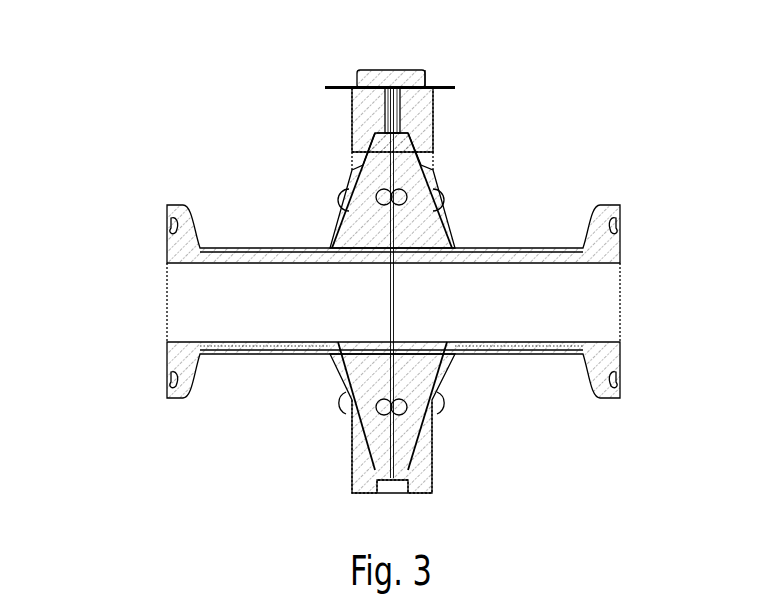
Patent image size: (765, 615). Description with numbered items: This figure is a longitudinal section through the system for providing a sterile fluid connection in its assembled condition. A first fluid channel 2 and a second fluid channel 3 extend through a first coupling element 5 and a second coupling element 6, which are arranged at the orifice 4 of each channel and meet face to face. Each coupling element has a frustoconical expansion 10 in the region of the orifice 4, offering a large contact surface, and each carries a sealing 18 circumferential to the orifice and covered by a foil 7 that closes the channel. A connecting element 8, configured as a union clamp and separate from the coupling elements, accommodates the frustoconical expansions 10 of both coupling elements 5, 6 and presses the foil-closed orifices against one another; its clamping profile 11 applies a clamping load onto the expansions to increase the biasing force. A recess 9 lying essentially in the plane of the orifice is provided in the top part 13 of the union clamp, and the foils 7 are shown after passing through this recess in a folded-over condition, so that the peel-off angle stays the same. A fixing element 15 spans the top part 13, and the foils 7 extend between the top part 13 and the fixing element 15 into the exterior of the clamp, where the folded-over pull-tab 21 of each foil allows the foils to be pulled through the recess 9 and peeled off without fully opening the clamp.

The first fluid channel 2 is at (178, 317).
The second fluid channel 3 is at (582, 307).
The orifice 4 is at (378, 317).
The first coupling element 5 is at (266, 347).
The second coupling element 6 is at (530, 348).
The foil 7 is at (393, 117).
The connecting element 8 is at (437, 133).
The recess 9 is at (402, 108).
The frustoconical expansion 10 is at (432, 180).
The clamping profile 11 is at (367, 133).
The top part 13 is at (430, 98).
The fixing element 15 is at (372, 80).
The sealing 18 is at (405, 205).
The pull-tab 21 is at (437, 88).